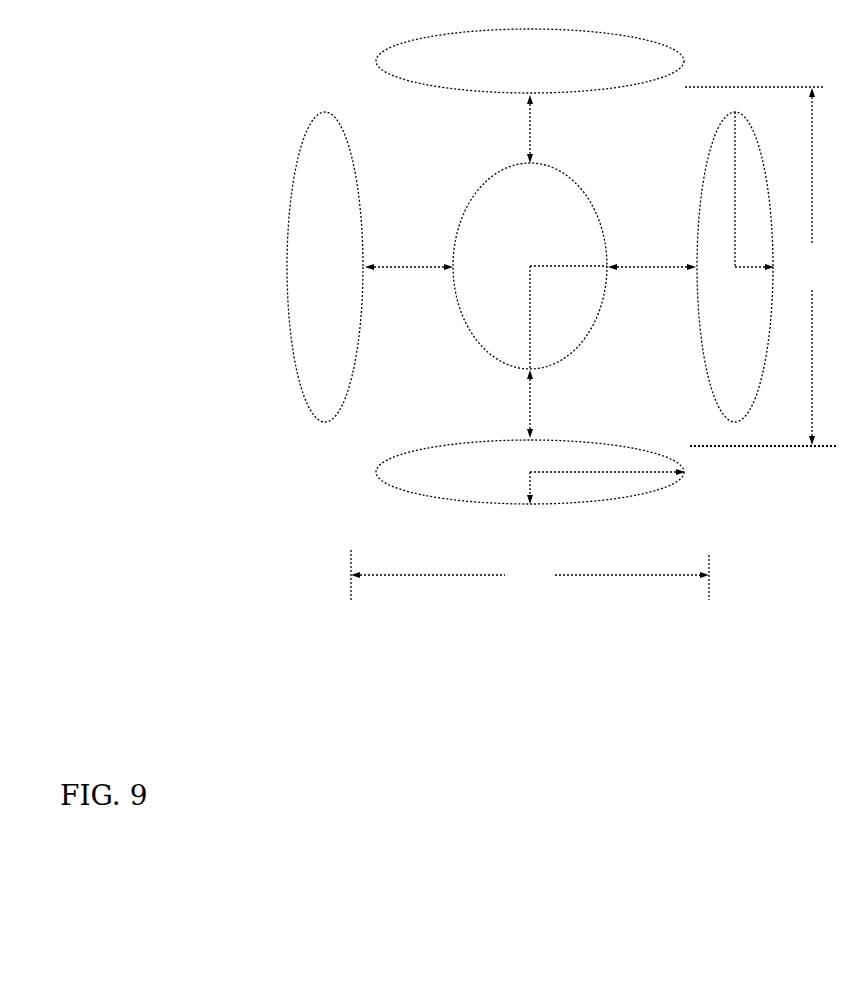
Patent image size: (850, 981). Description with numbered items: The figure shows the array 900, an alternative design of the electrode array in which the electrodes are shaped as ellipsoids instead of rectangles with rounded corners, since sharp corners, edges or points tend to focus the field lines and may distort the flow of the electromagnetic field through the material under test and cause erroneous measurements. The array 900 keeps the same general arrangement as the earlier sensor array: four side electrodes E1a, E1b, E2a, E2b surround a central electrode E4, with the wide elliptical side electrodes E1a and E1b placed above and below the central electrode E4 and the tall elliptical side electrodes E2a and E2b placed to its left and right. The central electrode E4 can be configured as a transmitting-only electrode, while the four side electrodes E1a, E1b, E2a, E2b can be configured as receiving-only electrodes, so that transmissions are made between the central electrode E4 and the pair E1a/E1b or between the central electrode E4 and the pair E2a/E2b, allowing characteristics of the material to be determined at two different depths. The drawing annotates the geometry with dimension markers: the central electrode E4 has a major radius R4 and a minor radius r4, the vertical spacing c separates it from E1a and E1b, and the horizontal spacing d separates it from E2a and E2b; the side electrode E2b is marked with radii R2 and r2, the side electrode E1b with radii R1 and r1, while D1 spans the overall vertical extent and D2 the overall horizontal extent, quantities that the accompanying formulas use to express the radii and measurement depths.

The array 900 is at (180, 73).
The side electrode E1a is at (530, 61).
The side electrode E1b is at (530, 472).
The side electrode E2a is at (325, 267).
The side electrode E2b is at (735, 267).
The central electrode E4 is at (530, 266).
The central electrode major radius R4 is at (545, 317).
The central electrode minor radius r4 is at (568, 285).
The vertical gap c is at (543, 266).
The horizontal gap d is at (530, 258).
The second electrode major radius R2 is at (722, 189).
The second electrode minor radius r2 is at (754, 279).
The vertical outer span D1 is at (761, 266).
The first electrode major radius R1 is at (629, 473).
The first electrode minor radius r1 is at (530, 506).
The horizontal outer span D2 is at (530, 575).